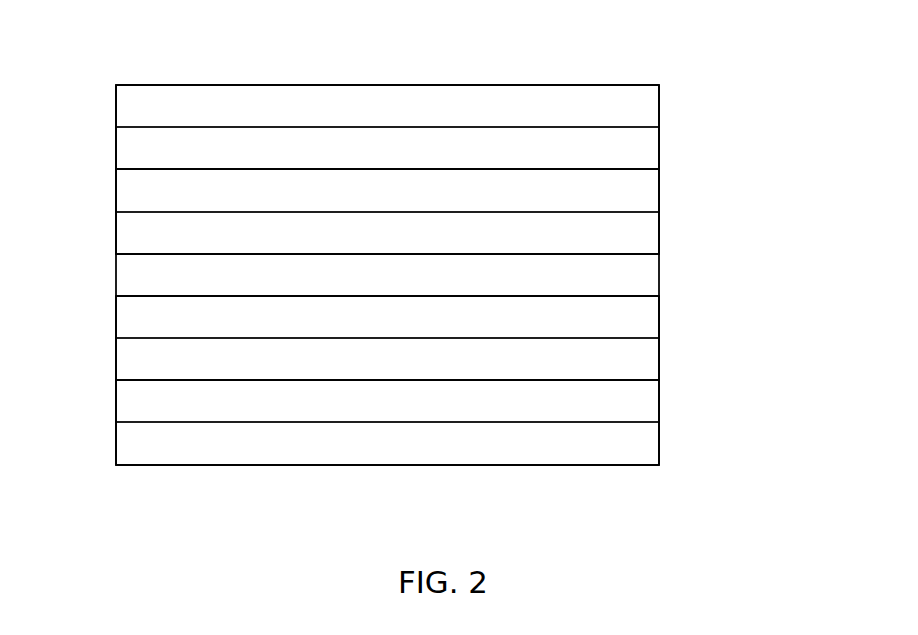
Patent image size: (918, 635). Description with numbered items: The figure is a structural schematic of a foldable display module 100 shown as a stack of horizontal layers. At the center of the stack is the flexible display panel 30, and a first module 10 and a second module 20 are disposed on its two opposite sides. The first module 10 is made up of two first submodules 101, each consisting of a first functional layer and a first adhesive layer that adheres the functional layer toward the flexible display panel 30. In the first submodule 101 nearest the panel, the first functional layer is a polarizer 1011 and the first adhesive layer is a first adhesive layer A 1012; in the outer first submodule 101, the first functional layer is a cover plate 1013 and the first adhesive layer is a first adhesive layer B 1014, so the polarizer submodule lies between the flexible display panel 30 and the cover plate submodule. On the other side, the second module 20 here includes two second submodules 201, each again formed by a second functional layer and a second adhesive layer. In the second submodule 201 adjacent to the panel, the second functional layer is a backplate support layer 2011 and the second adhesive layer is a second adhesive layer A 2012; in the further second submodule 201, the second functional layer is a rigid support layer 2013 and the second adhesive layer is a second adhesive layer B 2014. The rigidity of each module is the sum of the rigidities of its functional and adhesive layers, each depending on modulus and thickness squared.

The foldable display module 100 is at (400, 53).
The first module 10 is at (93, 78).
The second module 20 is at (93, 305).
The flexible display panel 30 is at (125, 264).
The first submodule 101 is at (748, 110).
The polarizer 1011 is at (648, 192).
The first adhesive layer A 1012 is at (648, 241).
The cover plate 1013 is at (648, 101).
The first adhesive layer B 1014 is at (648, 144).
The second submodule 201 is at (748, 332).
The backplate support layer 2011 is at (648, 371).
The second adhesive layer A 2012 is at (648, 329).
The rigid support layer 2013 is at (648, 448).
The second adhesive layer B 2014 is at (648, 407).